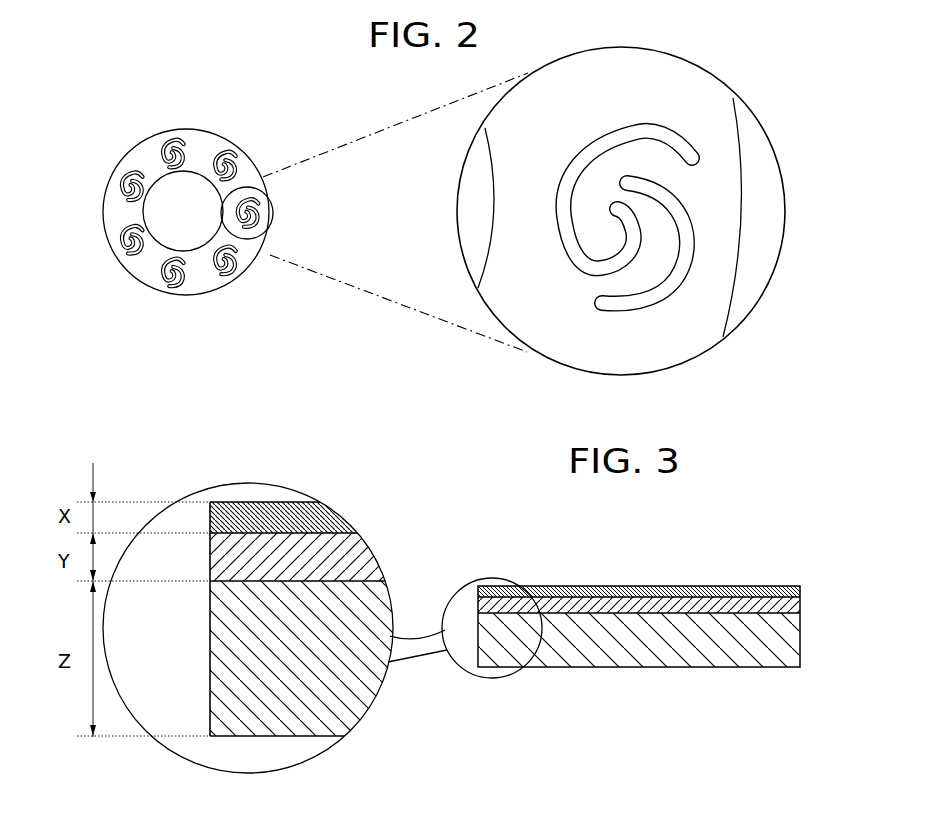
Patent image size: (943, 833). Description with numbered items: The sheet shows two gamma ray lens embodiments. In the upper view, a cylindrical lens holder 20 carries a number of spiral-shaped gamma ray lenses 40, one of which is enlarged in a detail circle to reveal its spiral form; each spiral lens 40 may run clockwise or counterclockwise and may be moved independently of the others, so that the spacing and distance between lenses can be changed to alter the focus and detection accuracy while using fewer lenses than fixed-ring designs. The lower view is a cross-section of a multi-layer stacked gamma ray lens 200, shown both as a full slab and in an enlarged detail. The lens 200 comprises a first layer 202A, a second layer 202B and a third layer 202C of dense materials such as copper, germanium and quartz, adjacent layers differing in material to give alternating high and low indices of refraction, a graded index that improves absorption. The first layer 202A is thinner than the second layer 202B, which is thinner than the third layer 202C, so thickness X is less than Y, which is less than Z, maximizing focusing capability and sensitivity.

In FIG. 2, the lens holder 20 is at (177, 116).
In FIG. 2, the spiral-shaped gamma ray lens 40 is at (660, 138).
In FIG. 3, the multi-layer stacked gamma ray lens 200 is at (663, 559).
In FIG. 3, the first layer 202A is at (323, 516).
In FIG. 3, the second layer 202B is at (357, 553).
In FIG. 3, the third layer 202C is at (360, 707).